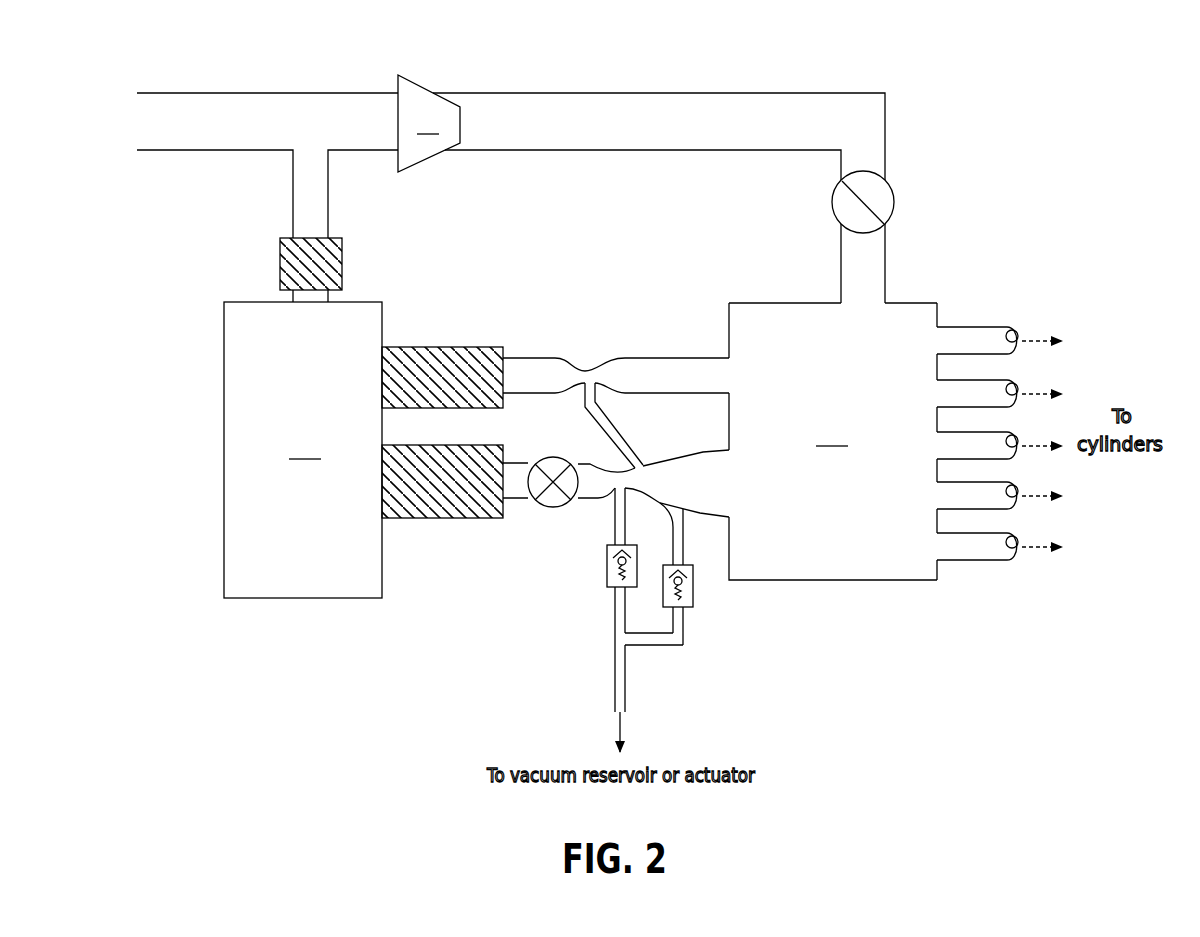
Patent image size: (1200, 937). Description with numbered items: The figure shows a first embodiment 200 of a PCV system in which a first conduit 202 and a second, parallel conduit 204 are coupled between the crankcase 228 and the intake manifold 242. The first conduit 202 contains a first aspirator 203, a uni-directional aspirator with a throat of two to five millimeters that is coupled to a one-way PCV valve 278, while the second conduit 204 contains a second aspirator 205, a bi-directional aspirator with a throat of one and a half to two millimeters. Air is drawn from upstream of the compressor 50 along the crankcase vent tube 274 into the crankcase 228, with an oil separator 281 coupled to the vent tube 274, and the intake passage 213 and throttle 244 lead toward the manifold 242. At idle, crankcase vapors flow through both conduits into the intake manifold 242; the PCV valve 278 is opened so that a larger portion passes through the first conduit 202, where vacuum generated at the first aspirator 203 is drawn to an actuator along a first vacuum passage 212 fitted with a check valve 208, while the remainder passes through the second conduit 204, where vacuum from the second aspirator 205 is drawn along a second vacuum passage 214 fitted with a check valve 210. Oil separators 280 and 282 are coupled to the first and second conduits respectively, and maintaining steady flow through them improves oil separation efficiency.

The first embodiment of a PCV system 200 is at (1116, 80).
The intake passage 213 is at (615, 93).
The compressor 50 is at (429, 123).
The crankcase vent tube 274 is at (328, 212).
The oil separator 281 is at (342, 259).
The main throttle 244 is at (887, 187).
The crankcase 228 is at (303, 450).
The oil separator 282 is at (421, 347).
The oil separator 280 is at (416, 518).
The second aspirator 205 is at (587, 356).
The second conduit 204 is at (623, 303).
The first aspirator 203 is at (613, 459).
The first conduit 202 is at (652, 433).
The PCV valve 278 is at (558, 507).
The first vacuum passage 212 is at (615, 666).
The second vacuum passage 214 is at (683, 640).
The check valve 208 is at (607, 578).
The check valve 210 is at (693, 594).
The intake manifold 242 is at (895, 441).